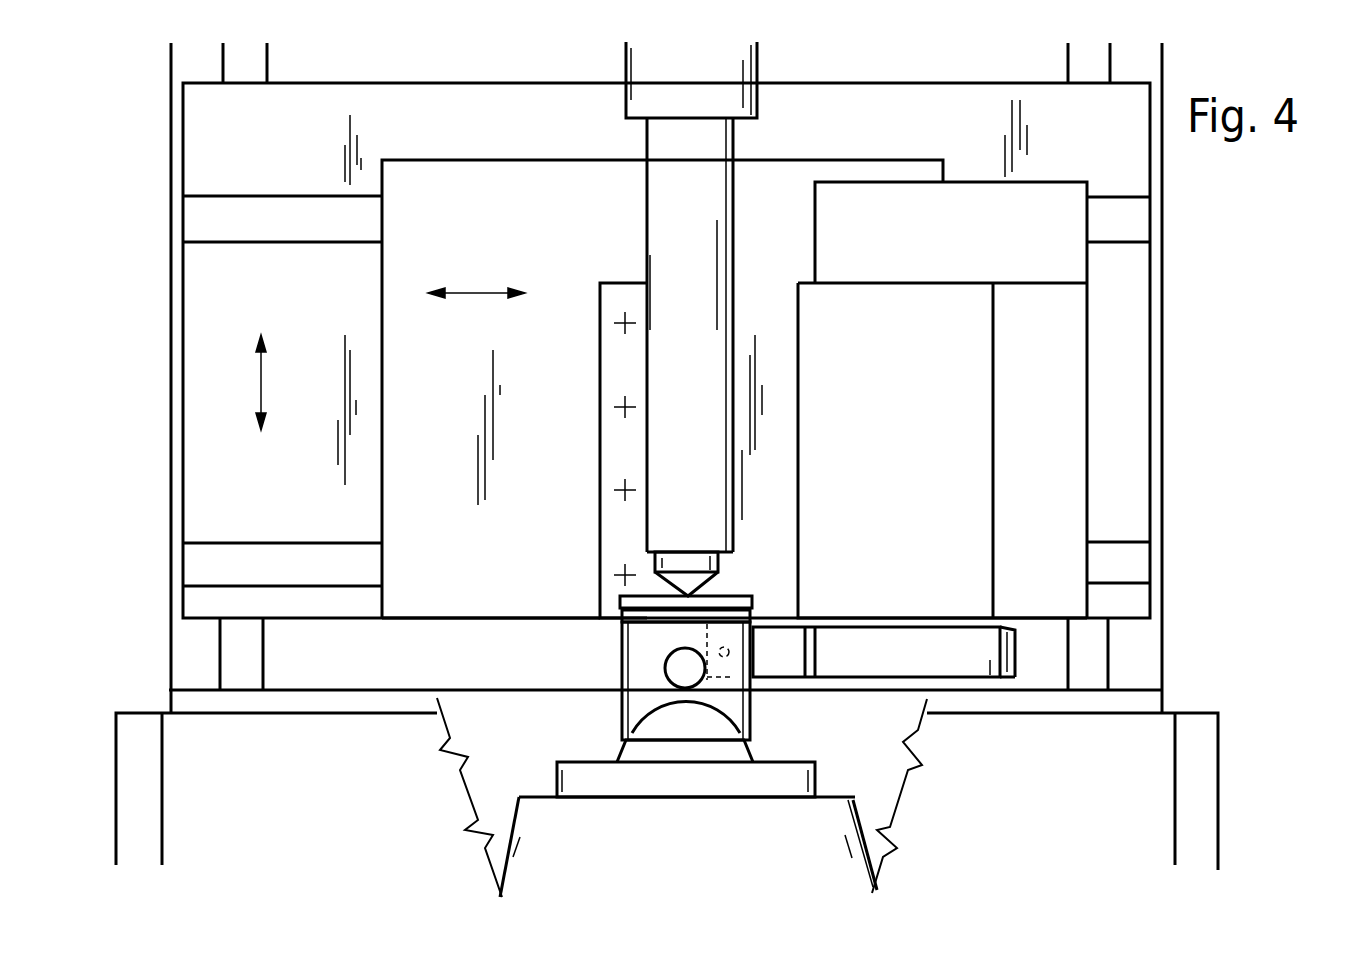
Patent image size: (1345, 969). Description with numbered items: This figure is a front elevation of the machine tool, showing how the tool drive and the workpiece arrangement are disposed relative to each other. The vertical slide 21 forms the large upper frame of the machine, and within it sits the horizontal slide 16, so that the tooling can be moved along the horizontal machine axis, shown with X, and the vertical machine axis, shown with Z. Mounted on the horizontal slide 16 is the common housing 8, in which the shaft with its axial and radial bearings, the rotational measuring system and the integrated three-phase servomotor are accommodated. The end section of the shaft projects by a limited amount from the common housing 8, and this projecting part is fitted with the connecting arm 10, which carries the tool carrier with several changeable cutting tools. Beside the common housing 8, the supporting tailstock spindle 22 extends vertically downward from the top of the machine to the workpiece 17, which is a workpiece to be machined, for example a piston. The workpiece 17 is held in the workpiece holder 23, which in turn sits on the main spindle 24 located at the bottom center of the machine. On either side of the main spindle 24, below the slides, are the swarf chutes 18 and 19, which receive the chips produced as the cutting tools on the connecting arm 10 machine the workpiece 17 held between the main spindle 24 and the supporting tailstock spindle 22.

The vertical slide 21 is at (299, 149).
The horizontal slide 16 is at (499, 209).
The supporting tailstock spindle 22 is at (716, 434).
The common housing 8 is at (881, 504).
The connecting arm 10 is at (881, 674).
The workpiece 17 is at (637, 700).
The workpiece holder 23 is at (806, 779).
The main spindle 24 is at (840, 820).
The swarf chute 18 is at (291, 823).
The swarf chute 19 is at (1045, 823).